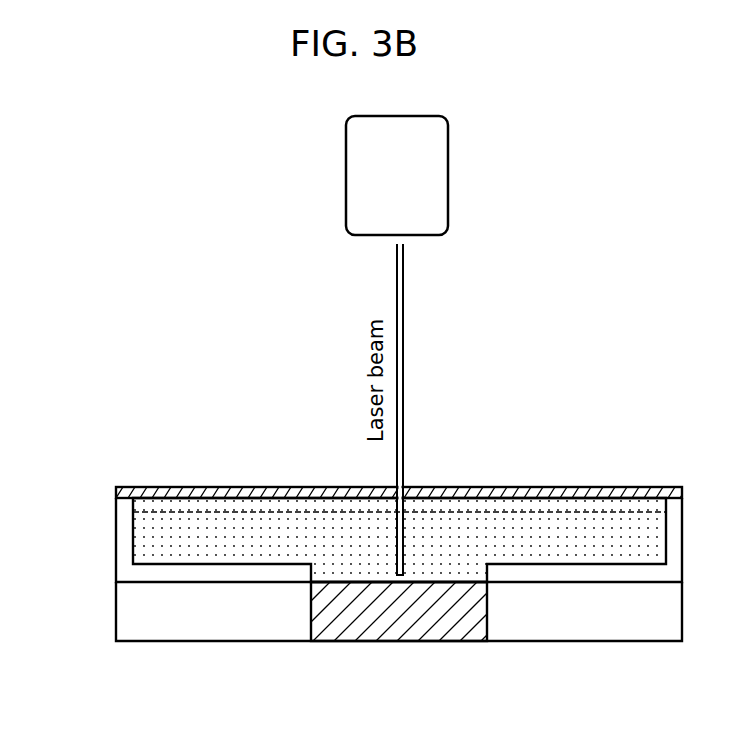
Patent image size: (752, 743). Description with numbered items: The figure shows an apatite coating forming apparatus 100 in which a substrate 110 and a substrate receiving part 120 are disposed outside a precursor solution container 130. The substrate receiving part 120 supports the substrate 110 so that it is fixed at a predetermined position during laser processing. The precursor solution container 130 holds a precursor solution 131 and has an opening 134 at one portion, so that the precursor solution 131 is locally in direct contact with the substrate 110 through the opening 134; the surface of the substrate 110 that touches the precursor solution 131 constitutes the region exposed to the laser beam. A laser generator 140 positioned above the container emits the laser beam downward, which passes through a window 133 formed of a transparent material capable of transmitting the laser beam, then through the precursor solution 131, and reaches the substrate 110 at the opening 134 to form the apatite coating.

The apatite coating forming apparatus 100 is at (70, 138).
The substrate 110 is at (397, 620).
The substrate receiving part 120 is at (140, 624).
The precursor solution container 130 is at (125, 547).
The precursor solution 131 is at (152, 528).
The window 133 is at (124, 492).
The opening 134 is at (449, 570).
The laser generator 140 is at (346, 178).